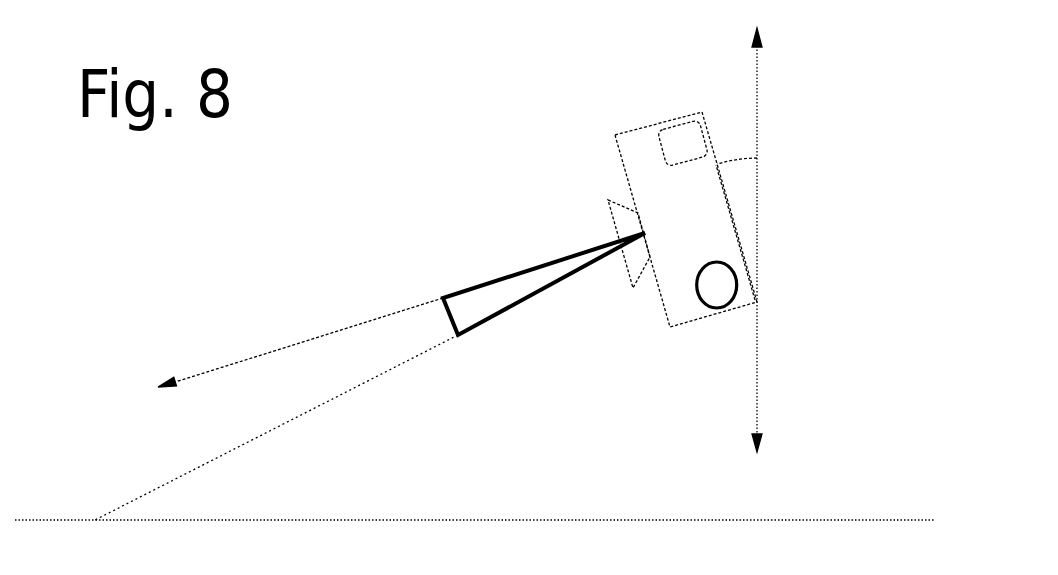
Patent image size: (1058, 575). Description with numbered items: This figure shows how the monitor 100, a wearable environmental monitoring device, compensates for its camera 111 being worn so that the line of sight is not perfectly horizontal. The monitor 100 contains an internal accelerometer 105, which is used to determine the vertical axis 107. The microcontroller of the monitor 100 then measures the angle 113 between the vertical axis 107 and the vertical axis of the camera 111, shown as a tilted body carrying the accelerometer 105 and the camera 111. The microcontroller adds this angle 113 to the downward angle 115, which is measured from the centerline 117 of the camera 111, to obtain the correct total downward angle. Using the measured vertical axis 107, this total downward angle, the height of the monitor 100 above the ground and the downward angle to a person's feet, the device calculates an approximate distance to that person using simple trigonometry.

The monitor 100 is at (630, 130).
The internal accelerometer 105 is at (720, 298).
The vertical axis 107 is at (758, 100).
The camera 111 is at (612, 217).
The angle 113 is at (735, 158).
The downward angle 115 is at (438, 300).
The centerline 117 is at (253, 357).